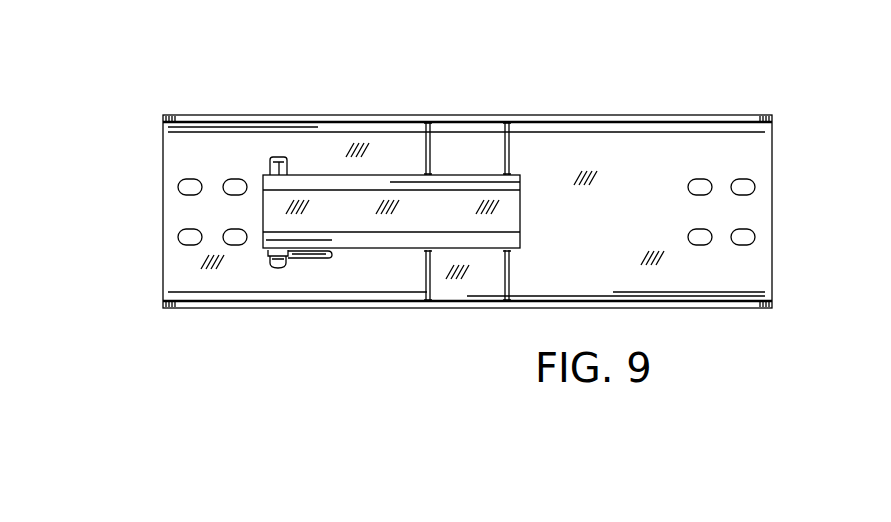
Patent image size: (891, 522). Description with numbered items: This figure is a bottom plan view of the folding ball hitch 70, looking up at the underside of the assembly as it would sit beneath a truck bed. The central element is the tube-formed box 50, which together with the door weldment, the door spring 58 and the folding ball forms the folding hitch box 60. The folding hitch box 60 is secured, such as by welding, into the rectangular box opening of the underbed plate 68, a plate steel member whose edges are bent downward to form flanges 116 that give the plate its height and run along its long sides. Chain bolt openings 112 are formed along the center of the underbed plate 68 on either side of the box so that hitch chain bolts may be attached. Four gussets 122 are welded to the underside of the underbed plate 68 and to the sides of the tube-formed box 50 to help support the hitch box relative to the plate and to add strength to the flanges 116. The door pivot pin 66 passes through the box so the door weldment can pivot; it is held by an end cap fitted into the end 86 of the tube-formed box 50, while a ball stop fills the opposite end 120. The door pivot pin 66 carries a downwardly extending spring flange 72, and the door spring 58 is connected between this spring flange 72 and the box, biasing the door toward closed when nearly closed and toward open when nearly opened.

The folding ball hitch 70 is at (683, 97).
The underbed plate 68 is at (752, 155).
The flanges 116 is at (638, 114).
The chain bolt openings 112 is at (238, 231).
The gussets 122 is at (503, 148).
The end of the tube-formed box 120 is at (521, 192).
The end of the tube-formed box 86 is at (263, 180).
The door pivot pin 66 is at (273, 123).
The spring flange 72 is at (268, 266).
The door spring 58 is at (319, 258).
The tube-formed box 50 is at (345, 250).
The folding hitch box 60 is at (383, 265).